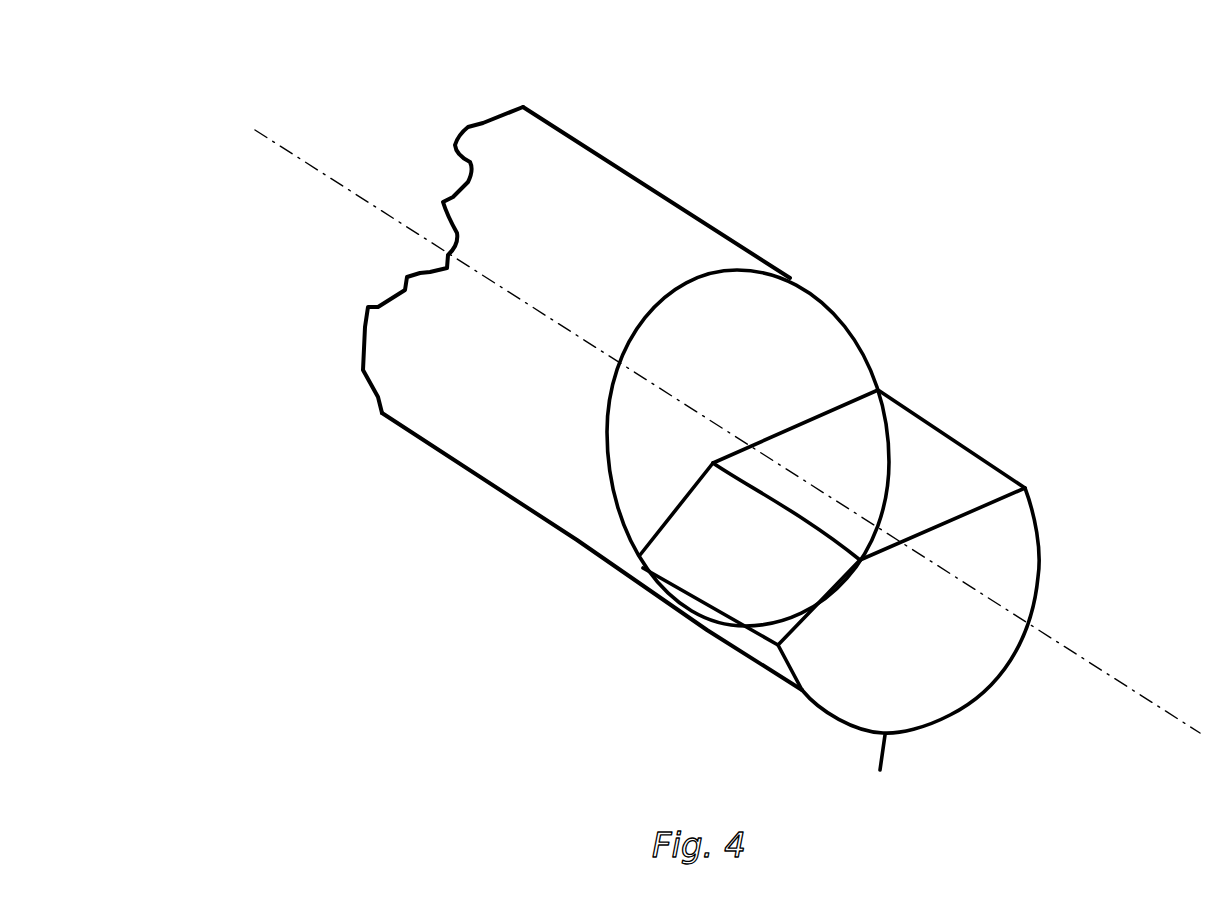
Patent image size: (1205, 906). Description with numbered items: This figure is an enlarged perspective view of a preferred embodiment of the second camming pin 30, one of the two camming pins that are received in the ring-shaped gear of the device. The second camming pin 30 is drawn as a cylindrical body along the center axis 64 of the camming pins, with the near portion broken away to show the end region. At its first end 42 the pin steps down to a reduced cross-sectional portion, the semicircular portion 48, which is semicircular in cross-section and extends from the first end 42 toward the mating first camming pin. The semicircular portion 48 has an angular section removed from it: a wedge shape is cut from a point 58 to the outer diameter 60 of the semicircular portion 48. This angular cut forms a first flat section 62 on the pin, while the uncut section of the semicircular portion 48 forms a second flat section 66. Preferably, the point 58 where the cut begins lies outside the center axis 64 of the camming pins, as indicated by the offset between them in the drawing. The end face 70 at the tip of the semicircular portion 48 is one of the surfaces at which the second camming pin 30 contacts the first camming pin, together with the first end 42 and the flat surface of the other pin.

The second camming pin 30 is at (747, 207).
The first end 42 is at (825, 327).
The semicircular portion 48 is at (968, 655).
The point 58 is at (858, 566).
The outer diameter 60 is at (880, 770).
The first flat section 62 is at (733, 562).
The center axis 64 is at (968, 587).
The second flat section 66 is at (918, 463).
The end face 70 is at (905, 665).